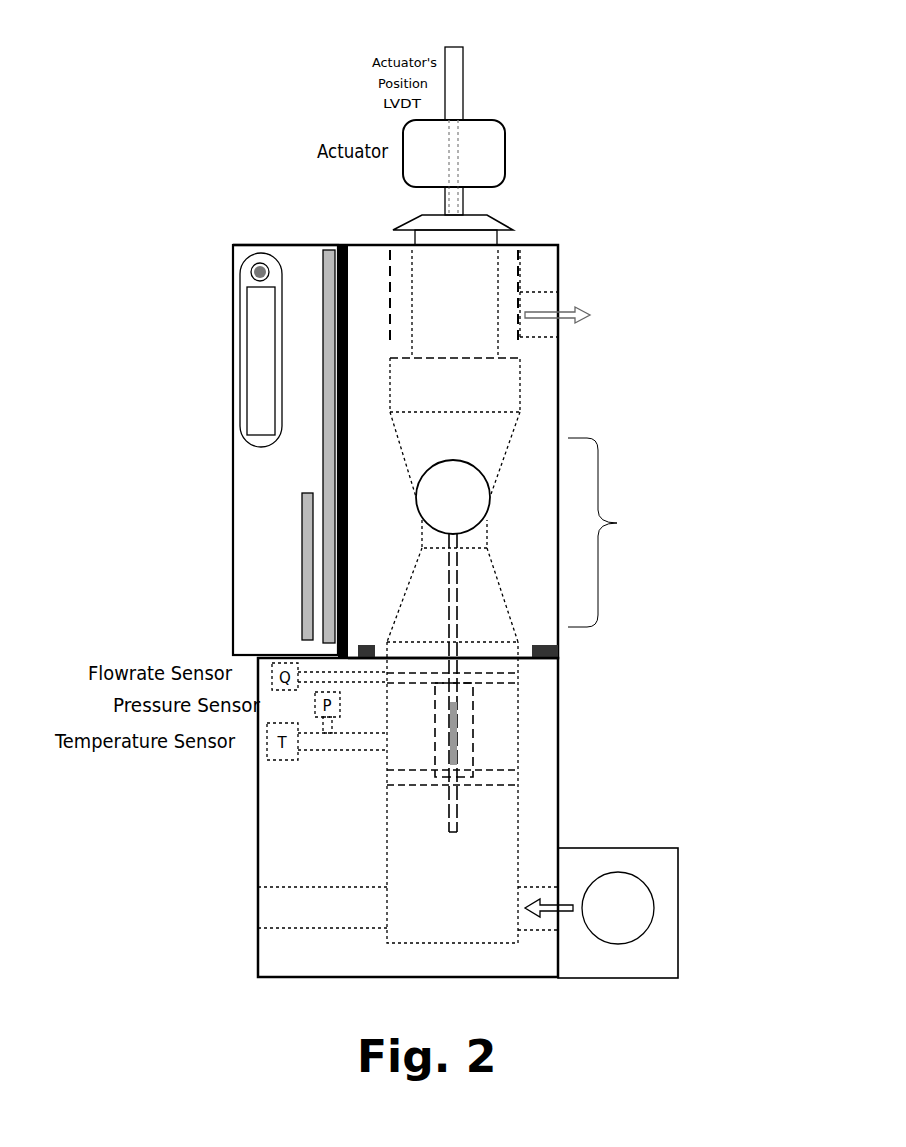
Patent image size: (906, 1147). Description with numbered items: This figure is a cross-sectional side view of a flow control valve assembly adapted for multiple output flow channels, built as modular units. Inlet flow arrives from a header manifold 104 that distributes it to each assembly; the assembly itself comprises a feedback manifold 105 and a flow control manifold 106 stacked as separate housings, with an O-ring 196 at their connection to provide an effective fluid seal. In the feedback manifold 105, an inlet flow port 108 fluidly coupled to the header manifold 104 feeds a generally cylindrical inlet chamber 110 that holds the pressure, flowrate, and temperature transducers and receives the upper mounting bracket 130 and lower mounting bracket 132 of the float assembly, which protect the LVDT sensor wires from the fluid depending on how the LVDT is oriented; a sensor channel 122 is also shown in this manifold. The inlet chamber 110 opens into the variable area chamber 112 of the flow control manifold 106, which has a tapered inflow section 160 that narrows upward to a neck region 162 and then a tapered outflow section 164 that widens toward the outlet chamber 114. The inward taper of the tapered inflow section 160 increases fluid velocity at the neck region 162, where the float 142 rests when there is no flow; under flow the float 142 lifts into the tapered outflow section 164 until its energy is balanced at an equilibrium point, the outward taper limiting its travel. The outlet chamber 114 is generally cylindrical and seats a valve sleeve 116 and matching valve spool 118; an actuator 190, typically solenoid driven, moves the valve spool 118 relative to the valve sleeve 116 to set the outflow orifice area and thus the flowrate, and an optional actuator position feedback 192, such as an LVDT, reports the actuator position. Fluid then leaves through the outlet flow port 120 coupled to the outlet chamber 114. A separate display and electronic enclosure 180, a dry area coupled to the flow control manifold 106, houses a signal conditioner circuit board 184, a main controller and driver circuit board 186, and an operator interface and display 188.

The header manifold 104 is at (684, 848).
The feedback manifold 105 is at (258, 827).
The flow control manifold 106 is at (567, 258).
The inlet flow port 108 is at (567, 940).
The inlet chamber 110 is at (452, 792).
The variable area chamber 112 is at (621, 532).
The outlet chamber 114 is at (500, 397).
The valve sleeve 116 is at (385, 263).
The valve spool 118 is at (390, 228).
The outlet flow port 120 is at (573, 298).
The sensor channel 122 is at (258, 905).
The upper mounting bracket 130 is at (532, 692).
The lower mounting bracket 132 is at (530, 788).
The float 142 is at (490, 502).
The tapered inflow section 160 is at (452, 595).
The neck region 162 is at (436, 533).
The tapered outflow section 164 is at (455, 454).
The display and electronic enclosure 180 is at (223, 562).
The signal conditioner circuit board 184 is at (292, 517).
The main controller and driver circuit board 186 is at (320, 482).
The operator interface and display 188 is at (223, 365).
The actuator 190 is at (507, 145).
The actuator position feedback 192 is at (473, 80).
The O-ring 196 is at (540, 650).